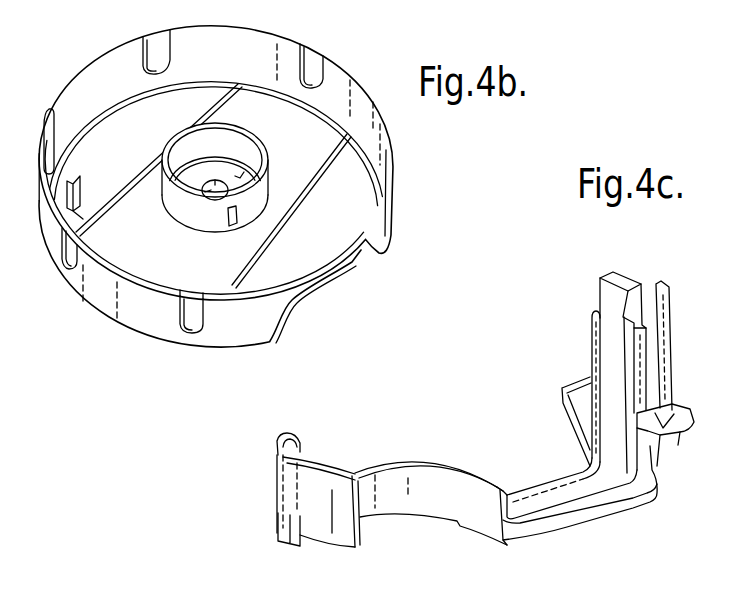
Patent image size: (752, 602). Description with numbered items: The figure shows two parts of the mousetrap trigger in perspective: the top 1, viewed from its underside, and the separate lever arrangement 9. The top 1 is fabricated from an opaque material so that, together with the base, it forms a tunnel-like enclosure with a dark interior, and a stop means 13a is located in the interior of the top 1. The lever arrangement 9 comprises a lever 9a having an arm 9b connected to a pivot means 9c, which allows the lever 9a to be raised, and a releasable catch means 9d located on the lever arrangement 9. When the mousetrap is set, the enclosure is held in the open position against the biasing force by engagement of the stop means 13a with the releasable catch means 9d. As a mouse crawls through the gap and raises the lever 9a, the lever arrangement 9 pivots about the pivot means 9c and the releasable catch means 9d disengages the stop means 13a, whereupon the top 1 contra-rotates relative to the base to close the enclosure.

In FIG. 4B, the top 1 is at (363, 83).
In FIG. 4B, the stop means 13a is at (83, 219).
In FIG. 4C, the lever arrangement 9 is at (460, 384).
In FIG. 4C, the lever 9a is at (293, 490).
In FIG. 4C, the arm 9b is at (593, 508).
In FIG. 4C, the pivot means 9c is at (647, 440).
In FIG. 4C, the releasable catch means 9d is at (621, 274).